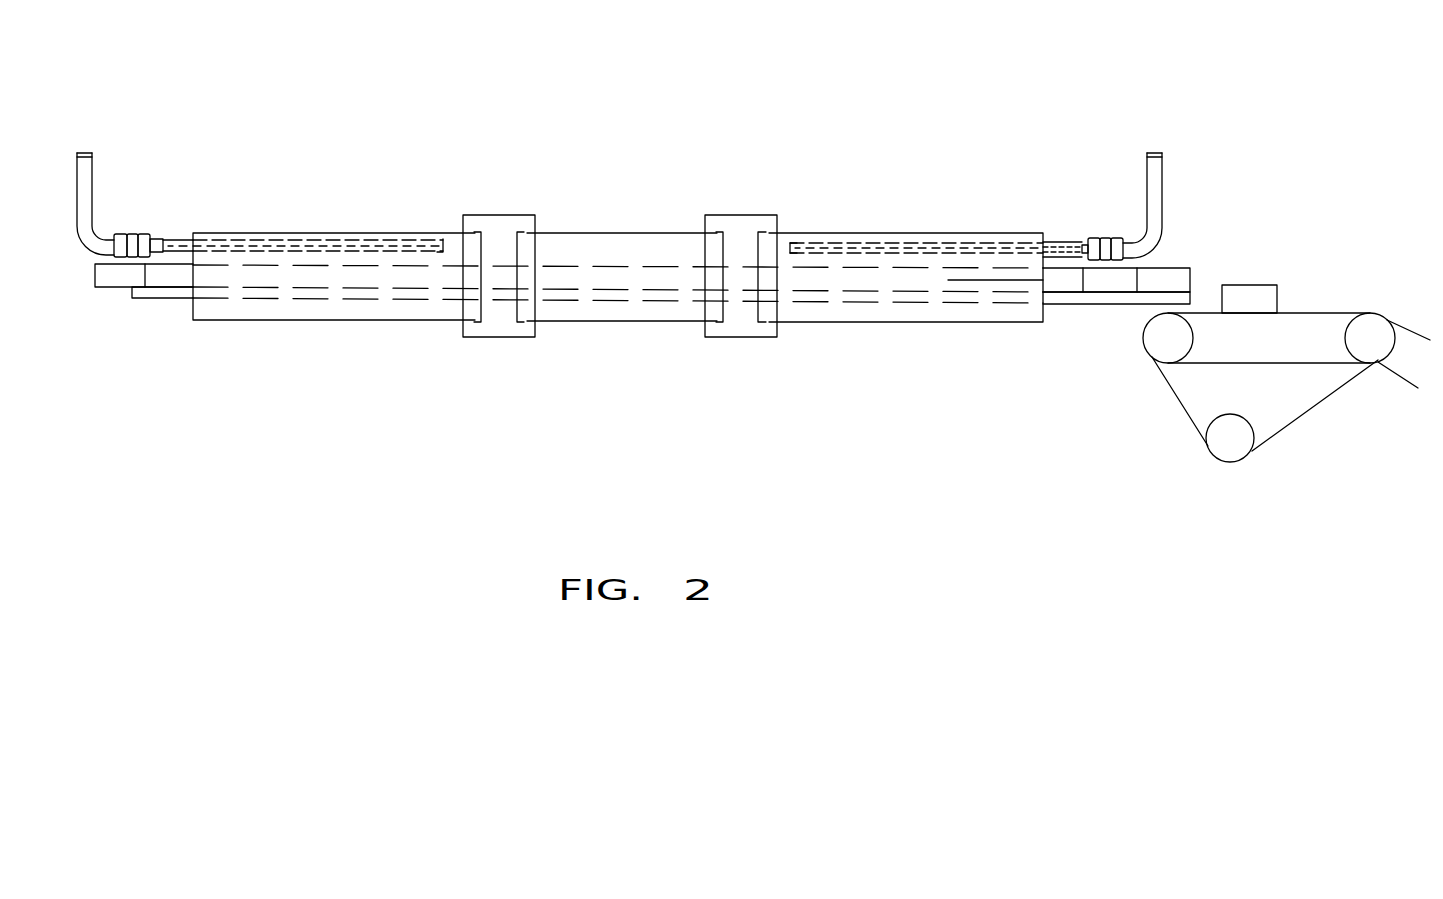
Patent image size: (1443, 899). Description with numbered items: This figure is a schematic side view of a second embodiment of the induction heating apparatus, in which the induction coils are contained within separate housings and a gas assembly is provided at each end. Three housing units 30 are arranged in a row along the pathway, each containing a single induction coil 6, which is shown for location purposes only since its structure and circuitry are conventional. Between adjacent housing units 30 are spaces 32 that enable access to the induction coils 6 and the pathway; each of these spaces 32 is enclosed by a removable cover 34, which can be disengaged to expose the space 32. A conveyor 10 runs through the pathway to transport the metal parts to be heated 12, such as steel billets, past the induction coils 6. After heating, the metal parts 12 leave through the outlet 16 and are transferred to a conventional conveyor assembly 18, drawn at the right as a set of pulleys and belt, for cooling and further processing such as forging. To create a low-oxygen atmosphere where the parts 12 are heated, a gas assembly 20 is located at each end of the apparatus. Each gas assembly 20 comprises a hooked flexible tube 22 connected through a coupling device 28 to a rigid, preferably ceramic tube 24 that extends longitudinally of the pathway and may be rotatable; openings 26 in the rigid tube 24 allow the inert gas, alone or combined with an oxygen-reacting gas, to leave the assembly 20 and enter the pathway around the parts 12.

The induction coil 6 is at (408, 313).
The conveyor 10 is at (150, 298).
The metal parts to be heated 12 is at (113, 288).
The outlet 16 is at (1043, 298).
The conveyor assembly 18 is at (1370, 263).
The gas assembly 20 is at (1222, 204).
The flexible tube 22 is at (88, 193).
The rigid tube 24 is at (227, 243).
The openings 26 is at (313, 250).
The coupling device 28 is at (143, 233).
The housing units 30 is at (327, 233).
The spaces 32 is at (498, 313).
The removable covers 34 is at (503, 215).